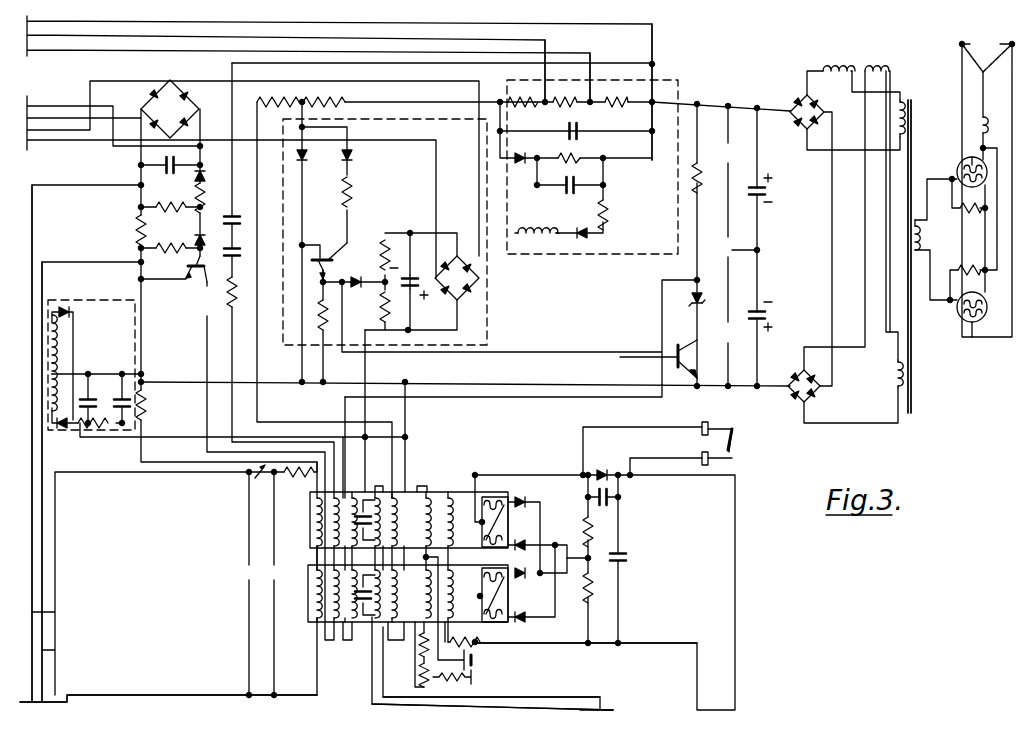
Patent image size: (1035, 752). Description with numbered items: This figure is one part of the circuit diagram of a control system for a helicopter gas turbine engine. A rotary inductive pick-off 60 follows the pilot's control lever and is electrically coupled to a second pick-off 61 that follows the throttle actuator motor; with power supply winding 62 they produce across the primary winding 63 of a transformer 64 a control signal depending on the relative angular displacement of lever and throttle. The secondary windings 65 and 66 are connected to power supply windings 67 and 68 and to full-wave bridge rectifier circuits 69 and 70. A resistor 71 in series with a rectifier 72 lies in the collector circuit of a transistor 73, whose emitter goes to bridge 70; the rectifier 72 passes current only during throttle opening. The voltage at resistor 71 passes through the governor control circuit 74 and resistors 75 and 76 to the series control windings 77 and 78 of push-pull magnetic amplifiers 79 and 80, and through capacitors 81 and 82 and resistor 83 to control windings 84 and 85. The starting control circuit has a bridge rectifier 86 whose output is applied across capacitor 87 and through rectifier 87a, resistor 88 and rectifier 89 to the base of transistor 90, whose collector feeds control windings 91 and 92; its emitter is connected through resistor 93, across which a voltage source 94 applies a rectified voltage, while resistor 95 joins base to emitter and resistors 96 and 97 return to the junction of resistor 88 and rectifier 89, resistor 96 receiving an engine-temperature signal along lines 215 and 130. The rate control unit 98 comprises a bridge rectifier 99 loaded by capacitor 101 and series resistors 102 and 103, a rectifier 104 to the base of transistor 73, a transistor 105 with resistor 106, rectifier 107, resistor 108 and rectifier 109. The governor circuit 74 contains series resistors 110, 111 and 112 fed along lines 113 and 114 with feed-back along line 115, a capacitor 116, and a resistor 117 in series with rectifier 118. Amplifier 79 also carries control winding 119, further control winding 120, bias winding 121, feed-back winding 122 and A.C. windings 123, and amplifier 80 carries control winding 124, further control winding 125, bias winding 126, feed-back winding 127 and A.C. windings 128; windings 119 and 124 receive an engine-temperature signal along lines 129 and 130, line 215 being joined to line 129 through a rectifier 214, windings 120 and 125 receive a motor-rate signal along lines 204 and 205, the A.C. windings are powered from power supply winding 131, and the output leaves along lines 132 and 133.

The rotary inductive pick-off 60 is at (958, 314).
The rotary inductive pick-off 61 is at (958, 168).
The power supply winding 62 is at (978, 123).
The primary winding 63 is at (922, 240).
The transformer 64 is at (914, 112).
The secondary winding 65 is at (903, 100).
The secondary winding 66 is at (912, 380).
The power supply winding 67 is at (842, 68).
The power supply winding 68 is at (884, 68).
The full-wave bridge rectifier circuit 69 is at (805, 94).
The full-wave bridge rectifier circuit 70 is at (818, 394).
The resistor 71 is at (702, 175).
The rectifier 72 is at (700, 294).
The transistor 73 is at (678, 345).
The governor control circuit 74 is at (680, 98).
The resistor 75 is at (325, 100).
The resistor 76 is at (270, 100).
The control winding 77 is at (410, 505).
The control winding 78 is at (415, 637).
The magnetic amplifier 79 is at (493, 496).
The magnetic amplifier 80 is at (508, 555).
The capacitor 81 is at (241, 207).
The capacitor 82 is at (241, 242).
The resistor 83 is at (236, 300).
The control winding 84 is at (365, 505).
The control winding 85 is at (362, 625).
The full-wave bridge rectifier 86 is at (182, 119).
The capacitor 87 is at (140, 166).
The rectifier 87a is at (202, 176).
The resistor 88 is at (202, 196).
The rectifier 89 is at (202, 246).
The transistor 90 is at (186, 269).
The control winding 91 is at (312, 555).
The control winding 92 is at (310, 568).
The resistor 93 is at (144, 403).
The voltage source 94 is at (72, 431).
The resistor 95 is at (184, 245).
The resistor 96 is at (139, 232).
The resistor 97 is at (170, 197).
The rate control unit 98 is at (488, 345).
The full-wave bridge rectifier 99 is at (474, 290).
The capacitor 101 is at (412, 290).
The resistor 102 is at (390, 252).
The resistor 103 is at (383, 313).
The rectifier 104 is at (358, 286).
The transistor 105 is at (335, 259).
The resistor 106 is at (316, 318).
The rectifier 107 is at (306, 160).
The resistor 108 is at (352, 205).
The rectifier 109 is at (352, 160).
The resistor 110 is at (614, 106).
The resistor 111 is at (557, 106).
The resistor 112 is at (514, 106).
The line 113 is at (655, 72).
The line 114 is at (547, 72).
The line 115 is at (592, 72).
The capacitor 116 is at (580, 135).
The resistor 117 is at (606, 186).
The rectifier 118 is at (518, 165).
The control winding 119 is at (312, 513).
The further control winding 120 is at (383, 492).
The bias winding 121 is at (432, 492).
The feed-back winding 122 is at (460, 495).
The A.C. windings 123 is at (508, 515).
The control winding 124 is at (310, 610).
The further control winding 125 is at (380, 625).
The bias winding 126 is at (413, 660).
The feed-back winding 127 is at (454, 575).
The A.C. windings 128 is at (508, 590).
The line 129 is at (312, 478).
The line 130 is at (42, 650).
The power supply winding 131 is at (586, 580).
The line 132 is at (551, 468).
The line 133 is at (548, 646).
The line 204 is at (491, 698).
The line 205 is at (436, 704).
The rectifier 214 is at (255, 480).
The line 215 is at (32, 612).